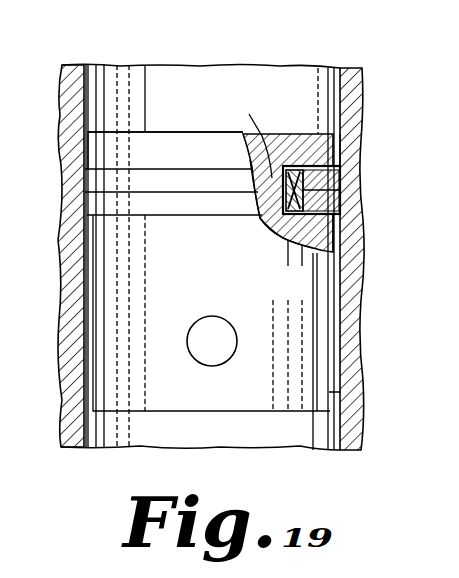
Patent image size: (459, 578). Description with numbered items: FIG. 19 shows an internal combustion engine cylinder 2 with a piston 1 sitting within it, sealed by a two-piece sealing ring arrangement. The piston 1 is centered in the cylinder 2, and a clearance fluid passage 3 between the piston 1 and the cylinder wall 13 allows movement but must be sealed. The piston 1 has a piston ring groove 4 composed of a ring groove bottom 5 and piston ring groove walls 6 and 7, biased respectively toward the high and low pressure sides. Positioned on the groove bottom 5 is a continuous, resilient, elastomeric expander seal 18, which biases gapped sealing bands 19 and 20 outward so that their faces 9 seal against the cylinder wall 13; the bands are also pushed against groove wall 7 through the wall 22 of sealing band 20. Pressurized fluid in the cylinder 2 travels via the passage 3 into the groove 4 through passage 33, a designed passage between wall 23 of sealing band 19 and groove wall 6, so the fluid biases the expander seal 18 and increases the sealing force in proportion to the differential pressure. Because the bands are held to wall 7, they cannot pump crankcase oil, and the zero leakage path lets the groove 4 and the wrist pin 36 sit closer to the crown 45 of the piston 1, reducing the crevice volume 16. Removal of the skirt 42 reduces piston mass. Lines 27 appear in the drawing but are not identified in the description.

The piston 1 is at (170, 303).
The cylinder 2 is at (154, 80).
The fluid passage 3 is at (337, 362).
The piston ring groove 4 is at (297, 134).
The ring groove bottom 5 is at (261, 216).
The piston ring groove wall 6 is at (252, 137).
The piston ring groove wall 7 is at (273, 238).
The faces 9 is at (341, 193).
The cylinder wall 13 is at (80, 78).
The crevice volume 16 is at (355, 112).
The expander seal 18 is at (264, 222).
The sealing band 19 is at (338, 179).
The sealing band 20 is at (340, 210).
The wall 22 is at (345, 240).
The wall 23 is at (349, 144).
The guide lines 27 is at (308, 247).
The passage 33 is at (342, 167).
The wrist pin 36 is at (227, 353).
The skirt 42 is at (341, 392).
The crown 45 is at (151, 132).